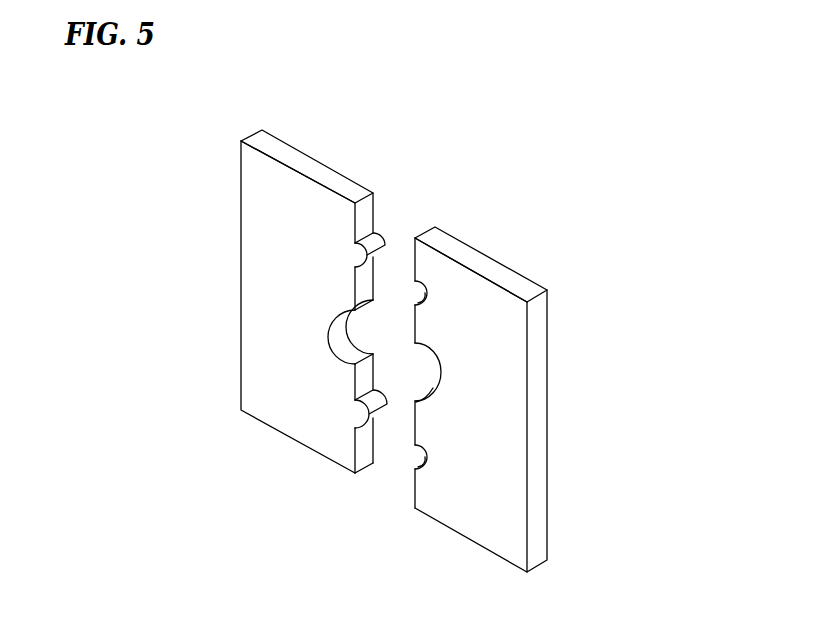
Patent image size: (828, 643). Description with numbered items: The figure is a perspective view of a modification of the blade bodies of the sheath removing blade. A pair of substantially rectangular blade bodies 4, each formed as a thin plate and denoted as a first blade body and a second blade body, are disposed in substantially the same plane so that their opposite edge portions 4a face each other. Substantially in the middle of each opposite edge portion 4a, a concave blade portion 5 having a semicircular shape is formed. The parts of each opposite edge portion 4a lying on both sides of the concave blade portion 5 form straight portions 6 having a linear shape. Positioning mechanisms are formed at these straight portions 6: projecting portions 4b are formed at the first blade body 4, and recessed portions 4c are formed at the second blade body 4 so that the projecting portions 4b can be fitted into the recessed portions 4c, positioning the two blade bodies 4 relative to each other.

The blade body 4 is at (238, 221).
The opposite edge portion 4a is at (364, 469).
The projecting portion 4b is at (374, 248).
The recessed portion 4c is at (415, 275).
The concave blade portion 5 is at (353, 348).
The straight portion 6 is at (368, 215).